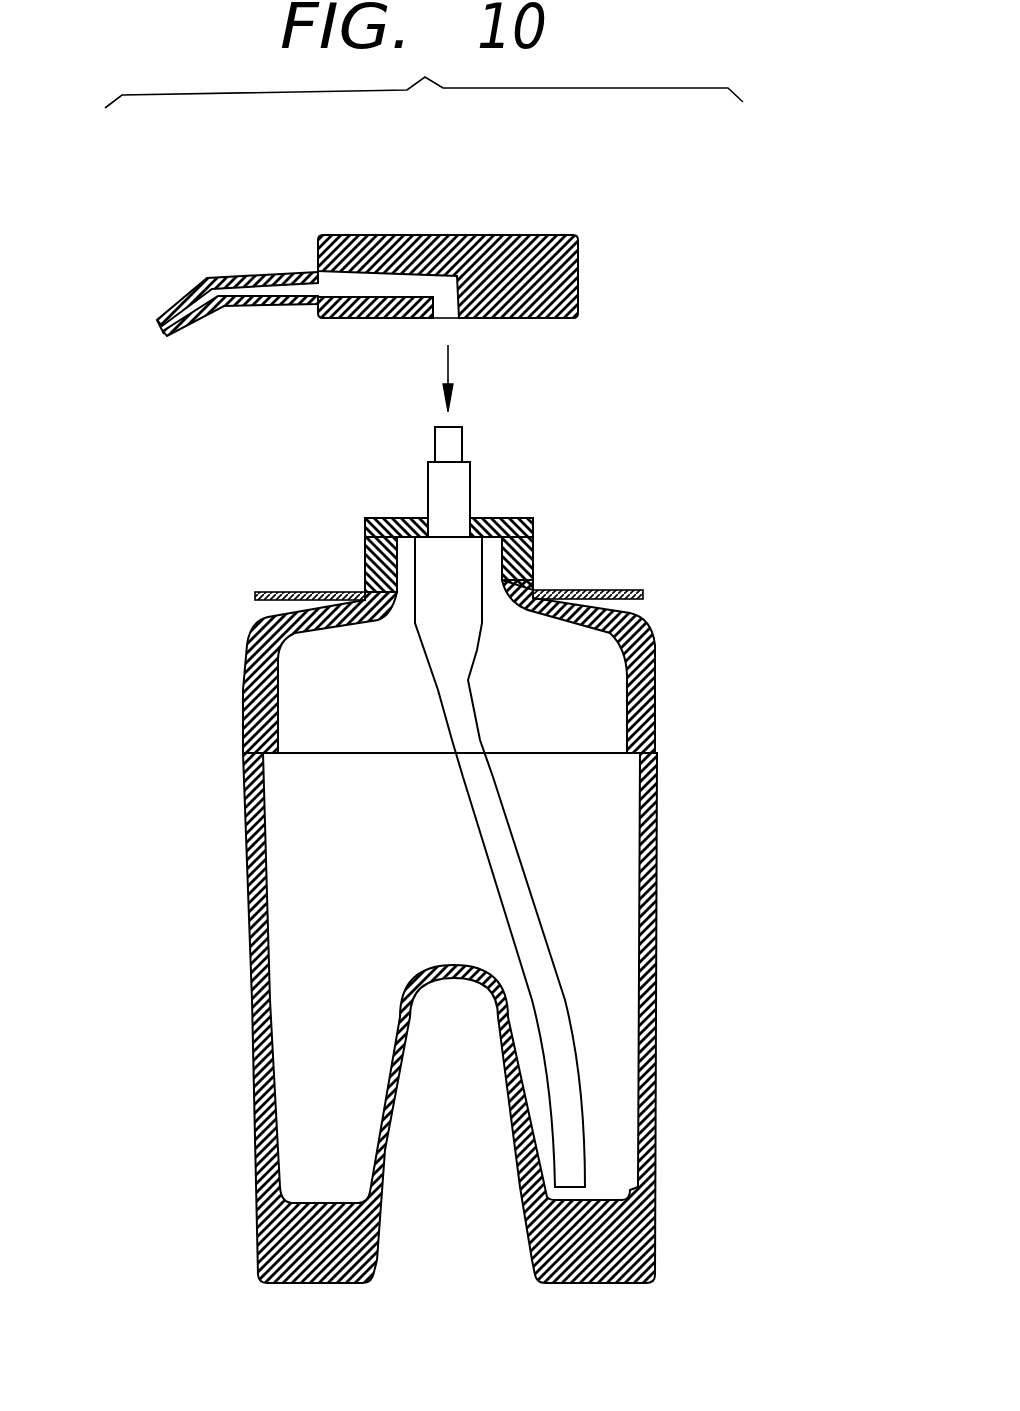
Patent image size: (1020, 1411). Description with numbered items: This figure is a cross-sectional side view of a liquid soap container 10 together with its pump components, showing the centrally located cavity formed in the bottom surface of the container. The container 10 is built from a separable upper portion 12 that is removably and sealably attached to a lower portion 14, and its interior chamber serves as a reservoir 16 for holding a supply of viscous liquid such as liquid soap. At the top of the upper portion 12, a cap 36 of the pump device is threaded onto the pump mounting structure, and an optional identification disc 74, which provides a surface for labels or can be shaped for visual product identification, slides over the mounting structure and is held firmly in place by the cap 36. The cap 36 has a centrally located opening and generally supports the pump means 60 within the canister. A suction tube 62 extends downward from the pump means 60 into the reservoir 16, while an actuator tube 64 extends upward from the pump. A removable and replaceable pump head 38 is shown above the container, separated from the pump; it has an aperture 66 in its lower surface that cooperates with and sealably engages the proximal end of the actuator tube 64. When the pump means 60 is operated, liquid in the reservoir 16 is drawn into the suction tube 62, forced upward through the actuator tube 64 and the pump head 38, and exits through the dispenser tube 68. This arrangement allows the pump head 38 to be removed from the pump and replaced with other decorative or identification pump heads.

The container 10 is at (672, 752).
The upper portion 12 is at (647, 630).
The lower portion 14 is at (656, 832).
The reservoir 16 is at (598, 904).
The cap 36 is at (533, 523).
The pump head 38 is at (563, 235).
The pump means 60 is at (425, 625).
The suction tube 62 is at (567, 1057).
The actuator tube 64 is at (462, 440).
The aperture 66 is at (453, 318).
The dispenser tube 68 is at (157, 322).
The identification disc 74 is at (630, 588).